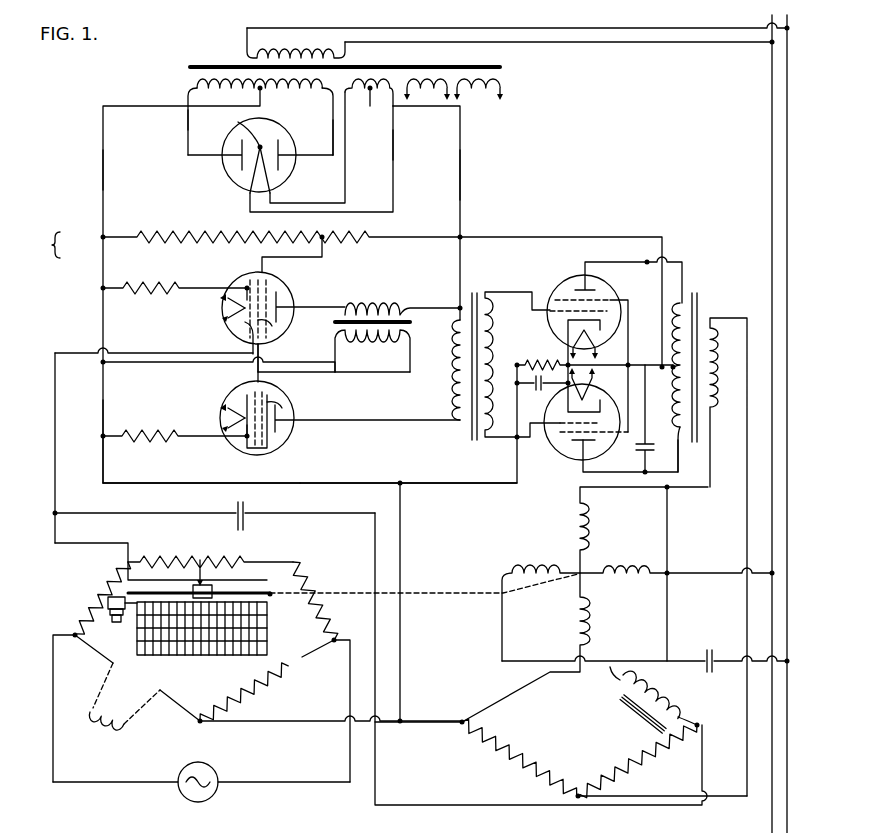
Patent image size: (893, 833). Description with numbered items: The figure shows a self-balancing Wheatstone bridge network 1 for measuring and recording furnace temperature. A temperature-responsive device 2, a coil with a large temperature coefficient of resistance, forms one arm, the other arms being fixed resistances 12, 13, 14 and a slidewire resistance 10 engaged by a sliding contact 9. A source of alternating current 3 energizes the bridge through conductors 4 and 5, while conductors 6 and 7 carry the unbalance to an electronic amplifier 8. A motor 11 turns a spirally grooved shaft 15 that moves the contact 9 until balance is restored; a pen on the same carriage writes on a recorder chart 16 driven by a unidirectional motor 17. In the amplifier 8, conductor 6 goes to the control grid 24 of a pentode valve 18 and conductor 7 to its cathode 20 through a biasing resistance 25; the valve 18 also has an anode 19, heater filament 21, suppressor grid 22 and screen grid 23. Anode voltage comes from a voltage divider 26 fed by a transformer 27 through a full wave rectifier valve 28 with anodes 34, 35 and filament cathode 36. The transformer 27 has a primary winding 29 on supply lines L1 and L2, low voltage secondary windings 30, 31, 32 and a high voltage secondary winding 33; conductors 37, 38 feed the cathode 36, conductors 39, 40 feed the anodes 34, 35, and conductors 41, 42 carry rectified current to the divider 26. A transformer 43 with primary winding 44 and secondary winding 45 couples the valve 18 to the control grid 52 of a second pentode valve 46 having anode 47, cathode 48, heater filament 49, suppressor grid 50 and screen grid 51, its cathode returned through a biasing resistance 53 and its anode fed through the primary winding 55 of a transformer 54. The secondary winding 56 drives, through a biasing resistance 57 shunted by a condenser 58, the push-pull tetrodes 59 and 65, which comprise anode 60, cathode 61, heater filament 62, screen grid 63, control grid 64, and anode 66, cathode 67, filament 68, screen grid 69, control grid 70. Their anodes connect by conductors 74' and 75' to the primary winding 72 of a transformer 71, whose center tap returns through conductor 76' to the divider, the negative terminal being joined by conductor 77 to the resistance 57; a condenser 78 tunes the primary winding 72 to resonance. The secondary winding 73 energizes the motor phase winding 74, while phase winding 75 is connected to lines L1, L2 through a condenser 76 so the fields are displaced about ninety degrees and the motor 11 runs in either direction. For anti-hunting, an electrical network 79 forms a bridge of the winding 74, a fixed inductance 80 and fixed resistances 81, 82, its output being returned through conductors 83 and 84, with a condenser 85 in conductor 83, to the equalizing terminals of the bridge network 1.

The bridge network 1 is at (208, 545).
The temperature-responsive device 2 is at (92, 727).
The source of alternating current 3 is at (212, 768).
The conductor 4 is at (54, 750).
The conductor 5 is at (350, 750).
The conductor 6 is at (102, 545).
The conductor 7 is at (178, 480).
The electronic amplifier 8 is at (48, 245).
The sliding contact 9 is at (204, 564).
The slidewire resistance 10 is at (252, 560).
The motor 11 is at (549, 529).
The fixed resistance 12 is at (284, 670).
The fixed resistance 13 is at (304, 588).
The fixed resistance 14 is at (96, 588).
The shaft 15 is at (269, 598).
The recorder chart 16 is at (250, 635).
The unidirectional motor 17 is at (112, 614).
The electronic valve 18 is at (281, 280).
The anode 19 is at (288, 303).
The cathode 20 is at (220, 321).
The heater filament 21 is at (215, 304).
The suppressor grid 22 is at (284, 320).
The screen grid 23 is at (265, 342).
The control grid 24 is at (246, 331).
The biasing resistance 25 is at (168, 276).
The voltage divider 26 is at (184, 223).
The transformer 27 is at (500, 67).
The full wave rectifier valve 28 is at (270, 128).
The line voltage primary winding 29 is at (298, 43).
The low voltage secondary winding 30 is at (360, 98).
The low voltage secondary winding 31 is at (438, 96).
The low voltage secondary winding 32 is at (488, 96).
The high voltage secondary winding 33 is at (234, 92).
The anode 34 is at (286, 155).
The anode 35 is at (230, 155).
The filament type cathode 36 is at (240, 128).
The conductor 37 is at (345, 173).
The conductor 38 is at (392, 143).
The conductor 39 is at (188, 130).
The conductor 40 is at (333, 135).
The conductor 41 is at (104, 172).
The conductor 42 is at (459, 171).
The transformer 43 is at (410, 322).
The primary winding 44 is at (355, 300).
The secondary winding 45 is at (390, 344).
The electronic valve 46 is at (267, 445).
The anode 47 is at (304, 394).
The cathode 48 is at (236, 402).
The heater filament 49 is at (214, 412).
The suppressor grid 50 is at (287, 406).
The screen grid 51 is at (275, 386).
The control grid 52 is at (254, 370).
The biasing resistance 53 is at (154, 430).
The transformer 54 is at (475, 293).
The primary winding 55 is at (452, 347).
The secondary winding 56 is at (493, 326).
The biasing resistance 57 is at (563, 358).
The condenser 58 is at (526, 386).
The tetrode 59 is at (609, 289).
The anode 60 is at (593, 283).
The cathode 61 is at (560, 322).
The heater filament 62 is at (594, 342).
The screen grid 63 is at (570, 294).
The control grid 64 is at (561, 298).
The tetrode 65 is at (584, 460).
The anode 66 is at (590, 454).
The cathode 67 is at (566, 414).
The filament 68 is at (592, 386).
The screen grid 69 is at (574, 444).
The control grid 70 is at (562, 426).
The transformer 71 is at (696, 292).
The primary winding 72 is at (672, 408).
The secondary winding 73 is at (718, 366).
The phase winding 74 is at (585, 604).
The conductor 74' is at (685, 275).
The phase winding 75 is at (676, 587).
The conductor 75' is at (693, 456).
The condenser 76 is at (644, 649).
The conductor 76' is at (562, 295).
The conductor 77 is at (476, 480).
The condenser 78 is at (670, 442).
The electrical network 79 is at (598, 718).
The fixed inductance 80 is at (669, 696).
The fixed resistance 81 is at (523, 743).
The fixed resistance 82 is at (629, 756).
The conductor 83 is at (438, 804).
The conductor 84 is at (446, 722).
The condenser 85 is at (239, 506).
The supply line L1 is at (772, 100).
The supply line L2 is at (789, 100).